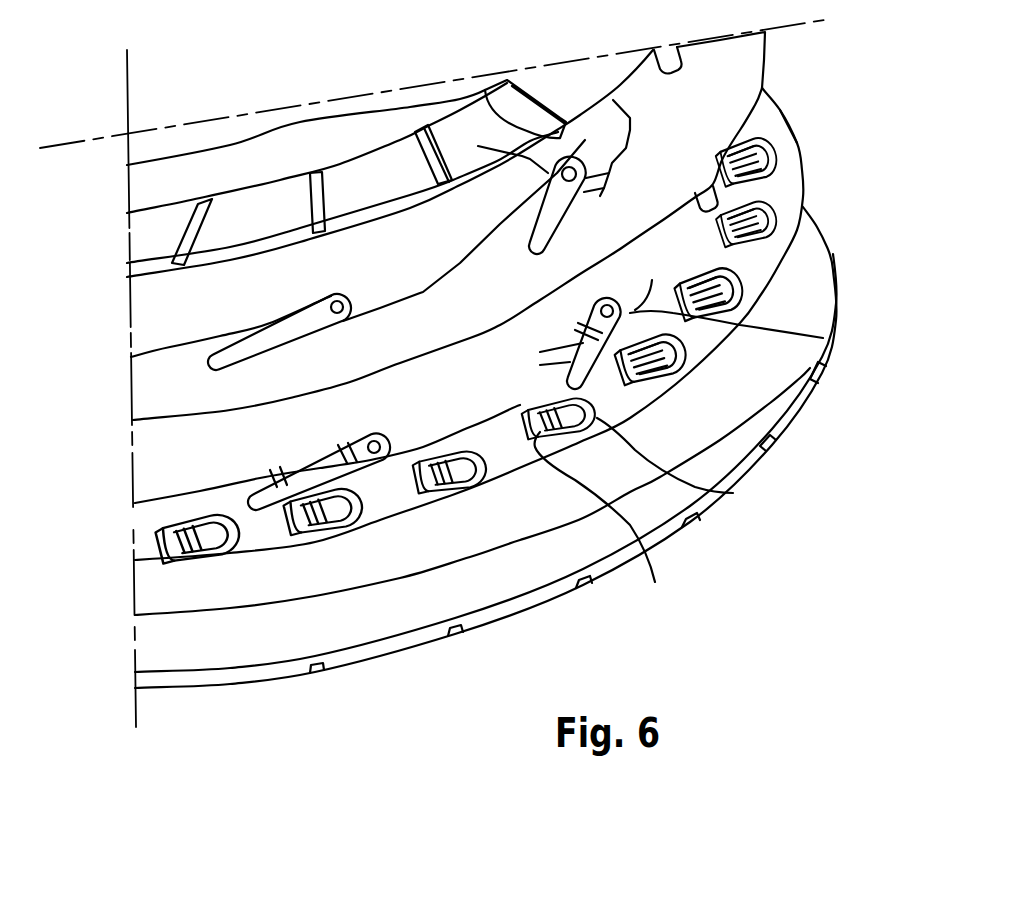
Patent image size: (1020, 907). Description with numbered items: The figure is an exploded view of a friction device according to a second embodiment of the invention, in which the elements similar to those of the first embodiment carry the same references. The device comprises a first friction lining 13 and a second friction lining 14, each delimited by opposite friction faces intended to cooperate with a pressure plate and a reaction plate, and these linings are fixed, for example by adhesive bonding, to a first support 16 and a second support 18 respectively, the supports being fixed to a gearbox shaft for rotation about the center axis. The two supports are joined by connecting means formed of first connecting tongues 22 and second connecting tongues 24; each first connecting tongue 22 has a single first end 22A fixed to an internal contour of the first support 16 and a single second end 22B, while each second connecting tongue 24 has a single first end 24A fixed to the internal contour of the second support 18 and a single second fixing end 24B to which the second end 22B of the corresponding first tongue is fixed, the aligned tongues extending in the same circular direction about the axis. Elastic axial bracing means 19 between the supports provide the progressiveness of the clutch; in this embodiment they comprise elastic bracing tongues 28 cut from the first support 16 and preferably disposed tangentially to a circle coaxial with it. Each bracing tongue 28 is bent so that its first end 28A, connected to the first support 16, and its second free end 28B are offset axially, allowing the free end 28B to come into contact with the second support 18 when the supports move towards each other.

The first friction lining 13 is at (487, 584).
The second friction lining 14 is at (572, 80).
The first support 16 is at (760, 260).
The second support 18 is at (736, 55).
The elastic axial bracing means 19 is at (770, 137).
The first connecting tongue 22 is at (605, 335).
The first end of first connecting tongue 22A is at (513, 397).
The second end of first connecting tongue 22B is at (823, 338).
The second connecting tongue 24 is at (527, 218).
The first end of second connecting tongue 24A is at (478, 280).
The second fixing end of second connecting tongue 24B is at (488, 92).
The elastic bracing tongue 28 is at (770, 150).
The first end of bracing tongue 28A is at (610, 524).
The second free end of bracing tongue 28B is at (733, 493).